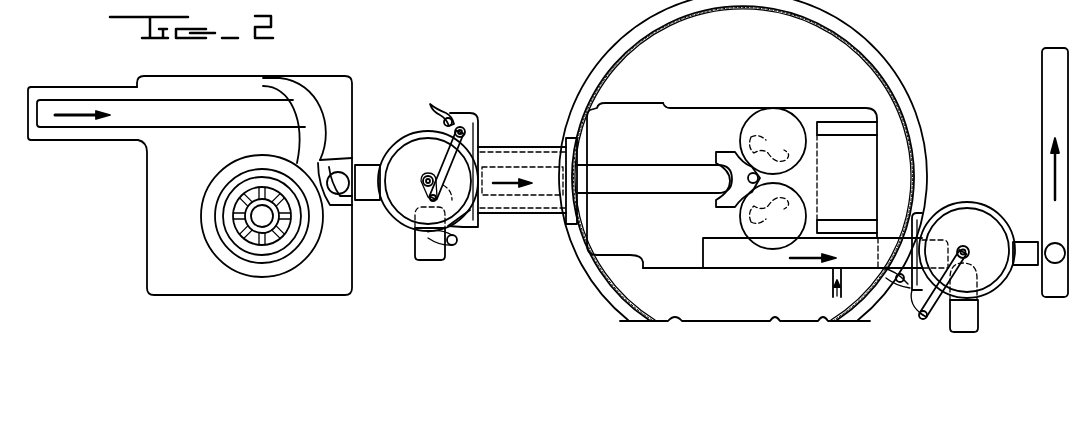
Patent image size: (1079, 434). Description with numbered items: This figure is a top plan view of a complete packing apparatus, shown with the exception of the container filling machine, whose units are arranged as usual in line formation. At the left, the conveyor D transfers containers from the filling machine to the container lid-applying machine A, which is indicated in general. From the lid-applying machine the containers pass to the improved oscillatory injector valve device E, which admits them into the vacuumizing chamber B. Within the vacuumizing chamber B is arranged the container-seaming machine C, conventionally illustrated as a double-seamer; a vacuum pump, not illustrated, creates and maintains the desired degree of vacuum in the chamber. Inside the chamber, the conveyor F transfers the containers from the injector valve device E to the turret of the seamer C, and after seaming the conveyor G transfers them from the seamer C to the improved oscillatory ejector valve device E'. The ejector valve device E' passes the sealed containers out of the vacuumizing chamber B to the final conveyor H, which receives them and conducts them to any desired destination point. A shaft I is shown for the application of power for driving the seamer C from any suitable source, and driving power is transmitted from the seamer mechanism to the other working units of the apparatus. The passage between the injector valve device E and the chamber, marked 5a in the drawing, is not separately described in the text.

The container lid-applying machine A is at (199, 246).
The vacuumizing chamber B is at (743, 160).
The container-seaming machine C is at (740, 147).
The conveyor D is at (86, 105).
The oscillatory injector valve device E is at (416, 178).
The oscillatory ejector valve device E' is at (960, 252).
The conveyor F is at (652, 173).
The conveyor G is at (753, 262).
The final conveyor H is at (1047, 130).
The shaft I is at (835, 293).
The connecting duct 5a is at (533, 148).